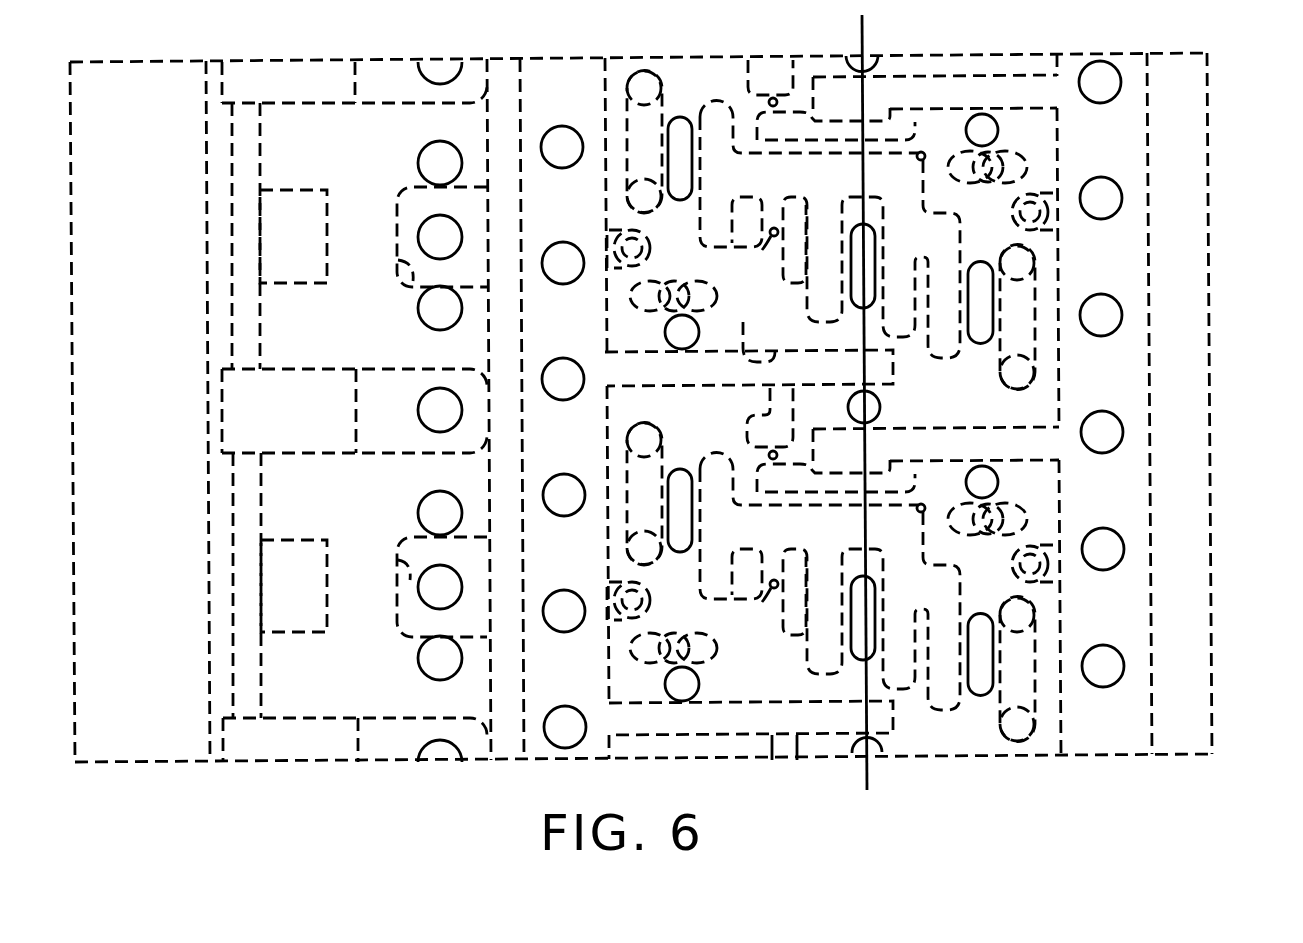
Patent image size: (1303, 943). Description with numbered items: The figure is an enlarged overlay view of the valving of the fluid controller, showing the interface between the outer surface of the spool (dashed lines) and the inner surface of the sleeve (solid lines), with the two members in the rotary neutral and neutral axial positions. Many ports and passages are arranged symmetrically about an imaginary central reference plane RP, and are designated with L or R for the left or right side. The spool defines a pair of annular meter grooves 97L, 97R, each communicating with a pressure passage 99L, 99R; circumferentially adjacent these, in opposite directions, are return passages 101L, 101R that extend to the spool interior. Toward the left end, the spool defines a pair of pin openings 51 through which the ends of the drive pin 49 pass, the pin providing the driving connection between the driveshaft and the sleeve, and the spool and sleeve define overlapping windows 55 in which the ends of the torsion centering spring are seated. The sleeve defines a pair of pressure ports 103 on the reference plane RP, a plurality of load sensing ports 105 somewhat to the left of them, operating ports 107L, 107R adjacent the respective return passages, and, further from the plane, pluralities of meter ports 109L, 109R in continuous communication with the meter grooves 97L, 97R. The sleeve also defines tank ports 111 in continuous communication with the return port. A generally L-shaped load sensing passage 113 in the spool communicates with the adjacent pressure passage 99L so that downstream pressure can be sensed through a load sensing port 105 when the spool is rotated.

The drive pin 49 is at (430, 590).
The pin openings 51 is at (406, 288).
The windows 55 is at (287, 740).
The meter groove 97L is at (547, 72).
The meter groove 97R is at (1125, 150).
The pressure passage 99L is at (751, 331).
The pressure passage 99R is at (938, 92).
The return passage 101L is at (672, 650).
The return passage 101R is at (1004, 524).
The pressure ports 103 is at (879, 404).
The load sensing ports 105 is at (752, 257).
The operating port 107L is at (699, 684).
The operating port 107R is at (997, 133).
The meter ports 109L is at (559, 268).
The meter ports 109R is at (1100, 218).
The tank ports 111 is at (437, 150).
The load sensing passage 113 is at (745, 437).
The reference plane RP is at (862, 33).